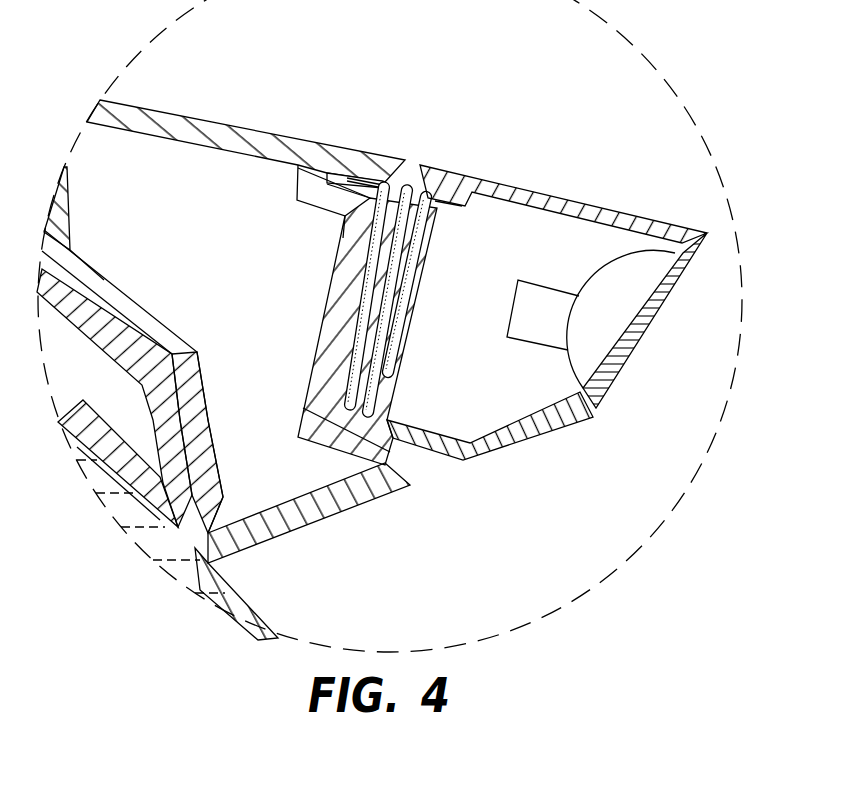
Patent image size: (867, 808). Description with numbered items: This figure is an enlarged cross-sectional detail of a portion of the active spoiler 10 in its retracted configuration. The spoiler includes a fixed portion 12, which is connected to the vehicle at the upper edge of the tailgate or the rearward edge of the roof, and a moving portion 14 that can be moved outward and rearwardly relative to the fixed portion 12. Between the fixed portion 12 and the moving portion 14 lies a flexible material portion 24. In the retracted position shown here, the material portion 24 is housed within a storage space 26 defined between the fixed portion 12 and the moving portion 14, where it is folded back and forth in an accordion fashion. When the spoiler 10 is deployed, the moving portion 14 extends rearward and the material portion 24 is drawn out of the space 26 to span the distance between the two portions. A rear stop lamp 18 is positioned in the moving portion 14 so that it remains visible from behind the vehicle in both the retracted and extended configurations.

The active spoiler 10 is at (405, 51).
The fixed portion 12 is at (217, 117).
The moving portion 14 is at (546, 192).
The rear stop lamp 18 is at (632, 347).
The flexible material portion 24 is at (408, 188).
The storage space 26 is at (338, 406).